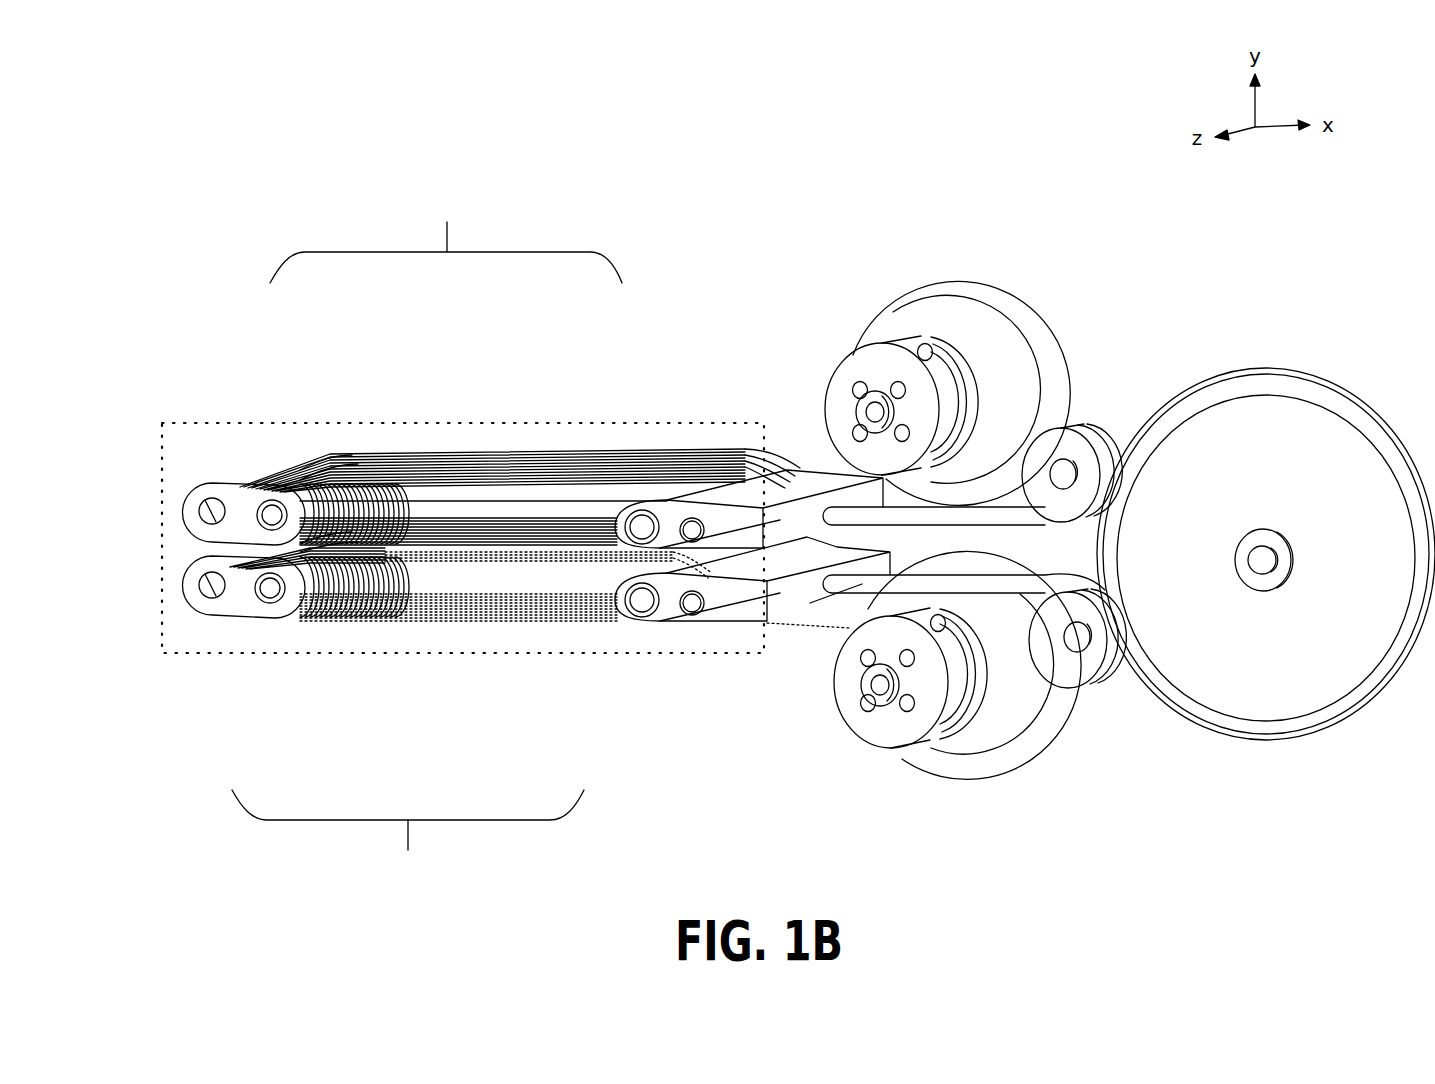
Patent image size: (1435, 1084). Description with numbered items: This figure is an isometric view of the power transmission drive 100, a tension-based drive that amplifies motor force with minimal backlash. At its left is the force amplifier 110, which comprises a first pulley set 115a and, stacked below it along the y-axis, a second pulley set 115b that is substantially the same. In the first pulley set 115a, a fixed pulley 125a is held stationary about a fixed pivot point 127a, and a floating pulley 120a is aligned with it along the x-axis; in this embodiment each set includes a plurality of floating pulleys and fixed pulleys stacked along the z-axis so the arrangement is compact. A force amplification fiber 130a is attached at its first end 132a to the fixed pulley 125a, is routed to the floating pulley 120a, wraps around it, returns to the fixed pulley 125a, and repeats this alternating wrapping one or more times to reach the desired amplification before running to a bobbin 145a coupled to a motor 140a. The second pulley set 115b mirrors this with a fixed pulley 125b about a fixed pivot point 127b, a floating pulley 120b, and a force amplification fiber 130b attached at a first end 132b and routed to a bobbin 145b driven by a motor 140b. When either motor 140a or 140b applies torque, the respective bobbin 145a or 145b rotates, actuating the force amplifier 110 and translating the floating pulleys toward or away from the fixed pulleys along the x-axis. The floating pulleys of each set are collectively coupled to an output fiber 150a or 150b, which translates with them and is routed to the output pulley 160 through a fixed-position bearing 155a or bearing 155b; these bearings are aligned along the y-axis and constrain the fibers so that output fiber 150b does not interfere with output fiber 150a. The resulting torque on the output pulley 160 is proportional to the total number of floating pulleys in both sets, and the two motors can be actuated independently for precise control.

The power transmission drive 100 is at (139, 64).
The force amplifier 110 is at (185, 423).
The first pulley set 115a is at (485, 350).
The second pulley set 115b is at (485, 743).
The floating pulley 120a is at (668, 513).
The floating pulley 120b is at (652, 618).
The fixed pulley 125a is at (237, 510).
The fixed pulley 125b is at (250, 597).
The fixed pivot point 127a is at (213, 517).
The fixed pivot point 127b is at (208, 600).
The force amplification fiber 130a is at (518, 463).
The force amplification fiber 130b is at (473, 617).
The first end 132a is at (307, 463).
The first end 132b is at (293, 613).
The motor 140a is at (1042, 357).
The motor 140b is at (970, 750).
The bobbin 145a is at (892, 360).
The bobbin 145b is at (900, 720).
The output fiber 150a is at (857, 513).
The output fiber 150b is at (860, 587).
The bearing 155a is at (1090, 445).
The bearing 155b is at (1090, 655).
The output pulley 160 is at (1293, 690).